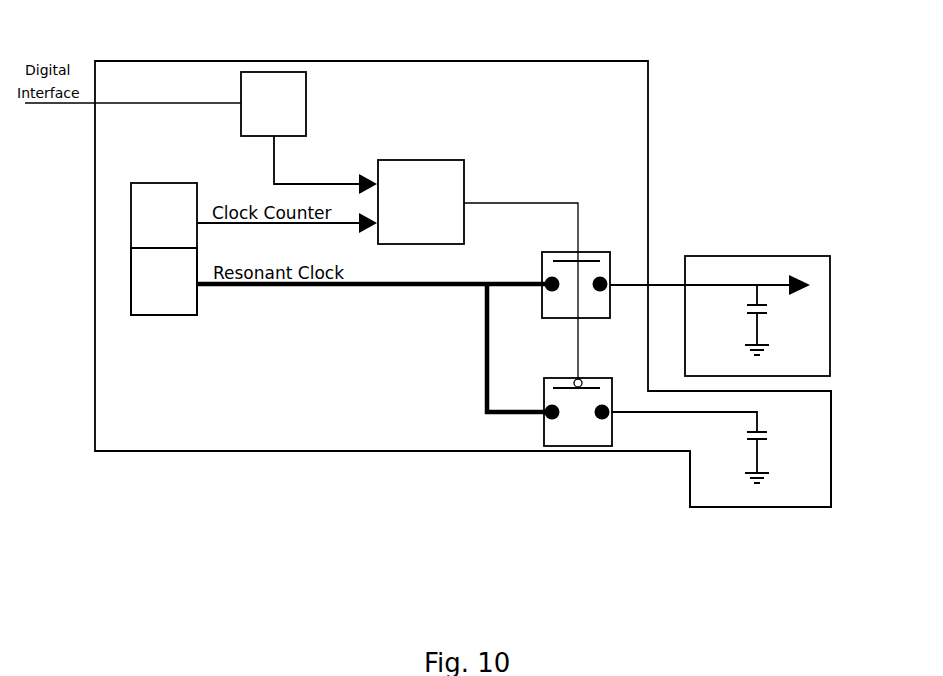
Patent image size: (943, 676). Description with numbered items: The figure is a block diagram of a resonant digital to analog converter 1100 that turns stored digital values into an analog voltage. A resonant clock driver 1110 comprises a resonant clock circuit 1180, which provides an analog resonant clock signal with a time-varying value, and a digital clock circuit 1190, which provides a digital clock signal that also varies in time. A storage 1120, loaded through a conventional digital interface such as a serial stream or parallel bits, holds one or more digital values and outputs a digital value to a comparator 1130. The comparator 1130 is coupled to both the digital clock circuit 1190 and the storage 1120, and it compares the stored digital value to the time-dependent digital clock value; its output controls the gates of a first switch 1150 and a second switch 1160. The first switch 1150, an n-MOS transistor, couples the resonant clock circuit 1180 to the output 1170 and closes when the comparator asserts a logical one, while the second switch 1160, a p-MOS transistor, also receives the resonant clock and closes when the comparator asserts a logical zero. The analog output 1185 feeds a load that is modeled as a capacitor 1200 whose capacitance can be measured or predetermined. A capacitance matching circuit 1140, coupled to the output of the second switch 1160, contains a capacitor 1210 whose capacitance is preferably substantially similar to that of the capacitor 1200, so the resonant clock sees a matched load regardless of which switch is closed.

The resonant digital to analog converter 1100 is at (625, 61).
The resonant clock driver 1110 is at (114, 251).
The storage 1120 is at (307, 114).
The comparator 1130 is at (464, 167).
The capacitance matching circuit 1140 is at (812, 420).
The first switch 1150 is at (558, 253).
The second switch 1160 is at (562, 379).
The output 1170 is at (660, 285).
The resonant clock circuit 1180 is at (197, 304).
The analog output 1185 is at (830, 266).
The digital clock circuit 1190 is at (197, 198).
The capacitor 1200 is at (767, 307).
The capacitor 1210 is at (767, 436).